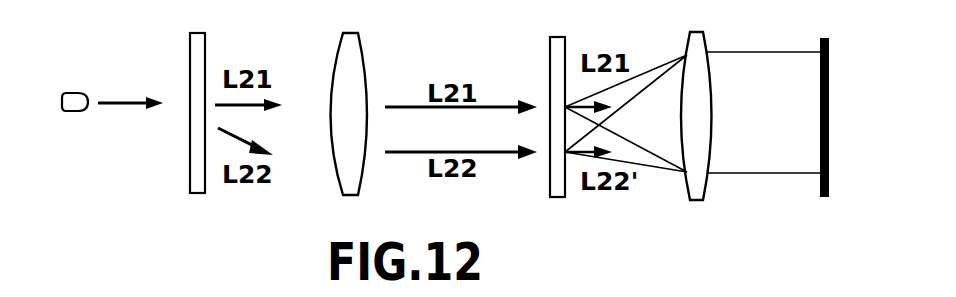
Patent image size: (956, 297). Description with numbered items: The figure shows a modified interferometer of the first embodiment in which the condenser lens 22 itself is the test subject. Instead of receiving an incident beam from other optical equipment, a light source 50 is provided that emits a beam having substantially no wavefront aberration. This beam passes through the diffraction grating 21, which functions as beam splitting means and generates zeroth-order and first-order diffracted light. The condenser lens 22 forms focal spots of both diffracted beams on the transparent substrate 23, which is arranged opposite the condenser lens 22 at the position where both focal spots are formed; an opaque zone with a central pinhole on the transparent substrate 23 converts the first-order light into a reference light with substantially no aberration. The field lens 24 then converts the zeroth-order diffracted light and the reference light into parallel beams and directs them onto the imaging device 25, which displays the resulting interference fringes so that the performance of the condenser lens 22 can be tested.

The light source 50 is at (72, 92).
The diffraction grating 21 is at (198, 33).
The condenser lens 22 is at (350, 33).
The transparent substrate 23 is at (555, 37).
The field lens 24 is at (696, 32).
The imaging device 25 is at (825, 38).